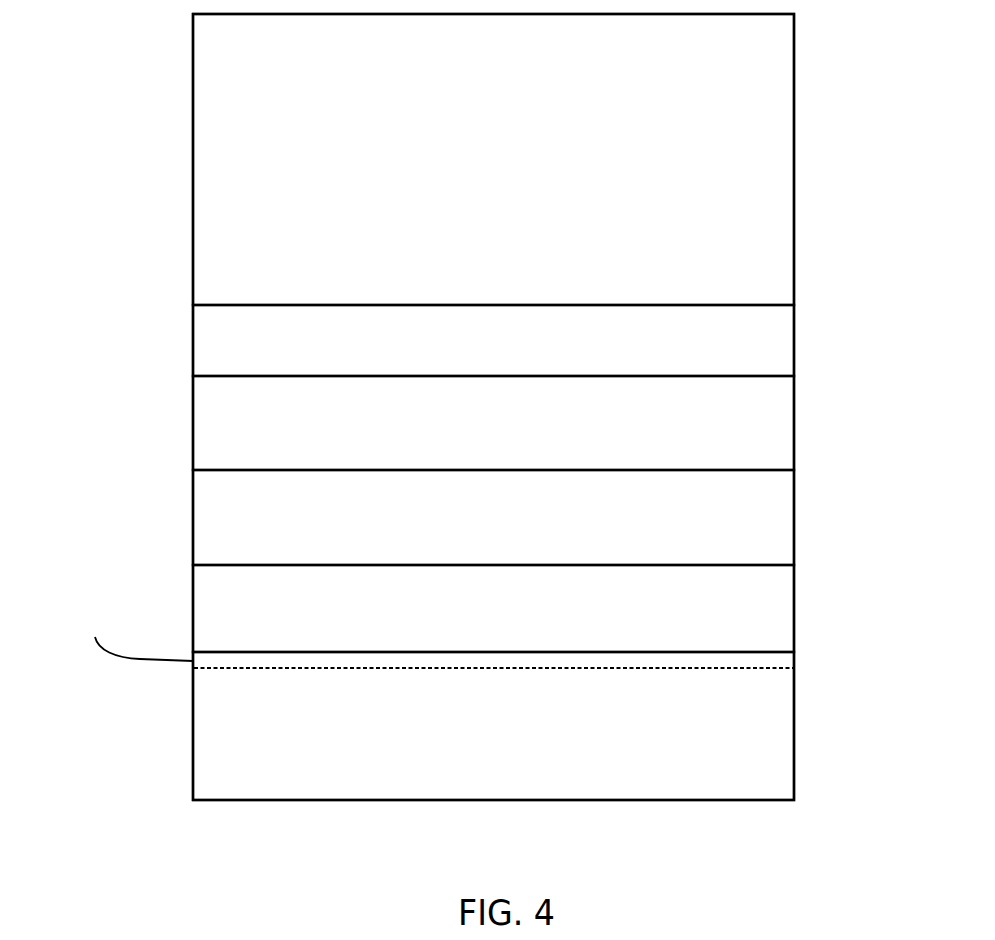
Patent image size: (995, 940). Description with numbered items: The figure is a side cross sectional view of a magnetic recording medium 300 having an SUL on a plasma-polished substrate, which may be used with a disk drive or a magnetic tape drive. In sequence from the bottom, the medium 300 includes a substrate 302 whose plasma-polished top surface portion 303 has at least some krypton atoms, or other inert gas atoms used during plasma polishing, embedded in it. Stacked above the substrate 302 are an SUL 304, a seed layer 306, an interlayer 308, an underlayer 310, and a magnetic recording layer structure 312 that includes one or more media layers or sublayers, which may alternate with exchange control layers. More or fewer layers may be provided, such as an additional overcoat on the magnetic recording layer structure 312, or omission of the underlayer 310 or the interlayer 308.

The magnetic recording medium 300 is at (133, 64).
The substrate 302 is at (794, 752).
The plasma-polished top surface portion 303 is at (794, 655).
The SUL 304 is at (794, 600).
The seed layer 306 is at (794, 517).
The interlayer 308 is at (794, 427).
The underlayer 310 is at (794, 335).
The magnetic recording layer structure 312 is at (794, 241).